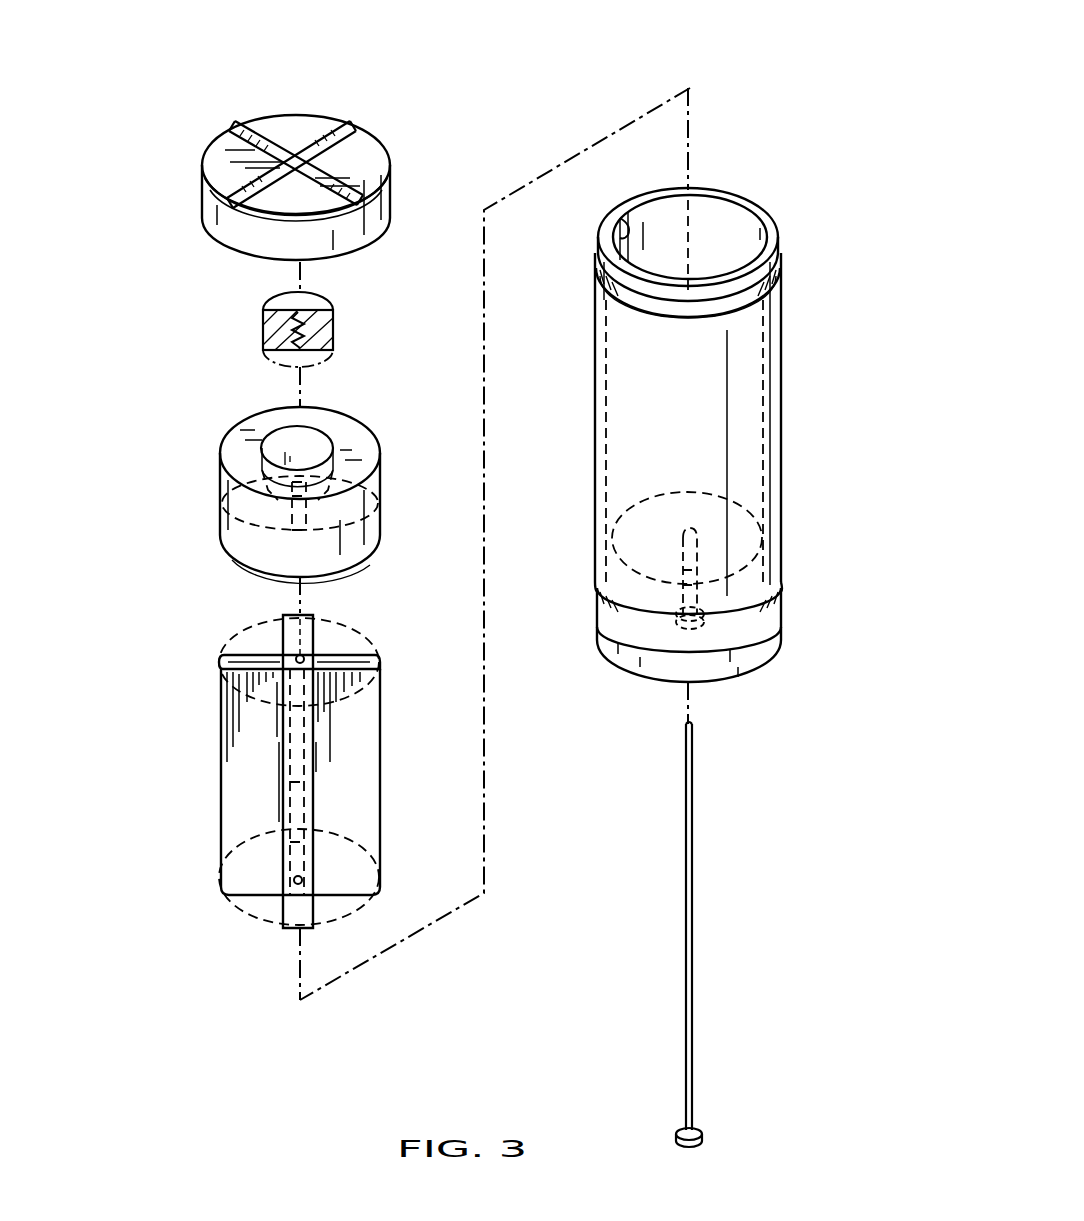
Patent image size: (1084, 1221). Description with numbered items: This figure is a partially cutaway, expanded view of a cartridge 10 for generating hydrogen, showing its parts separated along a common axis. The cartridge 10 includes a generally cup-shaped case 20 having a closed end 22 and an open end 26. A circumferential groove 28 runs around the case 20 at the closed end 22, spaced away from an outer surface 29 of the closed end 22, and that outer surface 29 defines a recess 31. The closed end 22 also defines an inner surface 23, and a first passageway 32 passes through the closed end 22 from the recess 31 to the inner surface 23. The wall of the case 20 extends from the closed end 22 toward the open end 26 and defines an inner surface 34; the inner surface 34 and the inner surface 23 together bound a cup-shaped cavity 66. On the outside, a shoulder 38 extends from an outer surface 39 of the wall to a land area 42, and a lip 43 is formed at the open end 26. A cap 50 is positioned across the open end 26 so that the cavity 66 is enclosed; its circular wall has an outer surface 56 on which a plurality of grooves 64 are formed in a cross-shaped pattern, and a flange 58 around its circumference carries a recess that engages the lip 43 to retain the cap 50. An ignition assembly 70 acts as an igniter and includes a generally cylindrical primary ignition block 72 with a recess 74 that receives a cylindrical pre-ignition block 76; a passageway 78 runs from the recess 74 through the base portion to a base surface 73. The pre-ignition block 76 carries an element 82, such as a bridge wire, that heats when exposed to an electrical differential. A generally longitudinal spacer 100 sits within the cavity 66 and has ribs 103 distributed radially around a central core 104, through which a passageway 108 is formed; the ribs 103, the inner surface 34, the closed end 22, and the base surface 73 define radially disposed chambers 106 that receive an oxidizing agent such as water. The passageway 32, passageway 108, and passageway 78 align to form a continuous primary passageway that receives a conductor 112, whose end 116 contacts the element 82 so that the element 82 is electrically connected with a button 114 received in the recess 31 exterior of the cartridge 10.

The cartridge 10 is at (802, 100).
The case 20 is at (784, 394).
The closed end 22 is at (778, 626).
The inner surface 23 is at (765, 520).
The open end 26 is at (783, 284).
The circumferential groove 28 is at (775, 596).
The outer surface 29 is at (741, 678).
The recess 31 is at (692, 626).
The first passageway 32 is at (682, 605).
The inner surface 34 is at (628, 225).
The shoulder 38 is at (612, 285).
The outer surface 39 is at (597, 388).
The land area 42 is at (760, 300).
The lip 43 is at (636, 281).
The cap 50 is at (402, 157).
The outer surface 56 is at (281, 121).
The flange 58 is at (246, 232).
The grooves 64 is at (345, 182).
The cup-shaped cavity 66 is at (725, 236).
The ignition assembly 70 is at (213, 378).
The primary ignition block 72 is at (380, 488).
The base surface 73 is at (360, 562).
The recess 74 is at (313, 443).
The pre-ignition block 76 is at (330, 300).
The passageway 78 is at (230, 527).
The element 82 is at (333, 342).
The spacer 100 is at (218, 744).
The ribs 103 is at (248, 658).
The central core 104 is at (307, 664).
The chambers 106 is at (264, 617).
The passageway 108 is at (306, 657).
The conductor 112 is at (692, 851).
The button 114 is at (700, 1134).
The end 116 is at (693, 724).